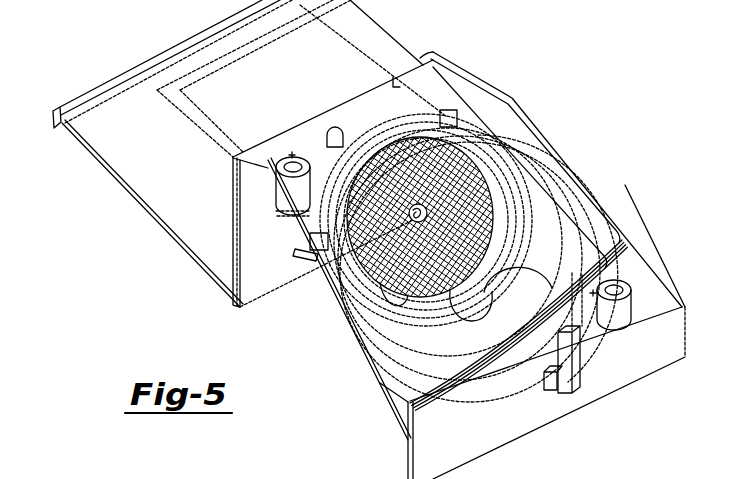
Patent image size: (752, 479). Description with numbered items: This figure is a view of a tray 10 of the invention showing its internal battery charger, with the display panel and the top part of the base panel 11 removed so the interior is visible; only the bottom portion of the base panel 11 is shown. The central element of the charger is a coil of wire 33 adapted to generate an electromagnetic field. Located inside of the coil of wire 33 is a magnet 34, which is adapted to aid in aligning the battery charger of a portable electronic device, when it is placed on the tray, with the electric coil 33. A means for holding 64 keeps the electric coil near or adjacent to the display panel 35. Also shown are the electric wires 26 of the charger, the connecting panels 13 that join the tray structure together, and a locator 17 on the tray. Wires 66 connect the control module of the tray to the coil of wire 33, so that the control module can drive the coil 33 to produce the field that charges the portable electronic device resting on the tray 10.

The tray 10 is at (563, 405).
The base panel 11 is at (92, 135).
The connecting panels 13 is at (225, 243).
The locator 17 is at (76, 97).
The electric wires 26 is at (198, 62).
The coil of wire 33 is at (370, 333).
The magnet 34 is at (340, 296).
The display panel 35 is at (368, 364).
The means for holding 64 is at (292, 150).
The wires 66 is at (618, 227).